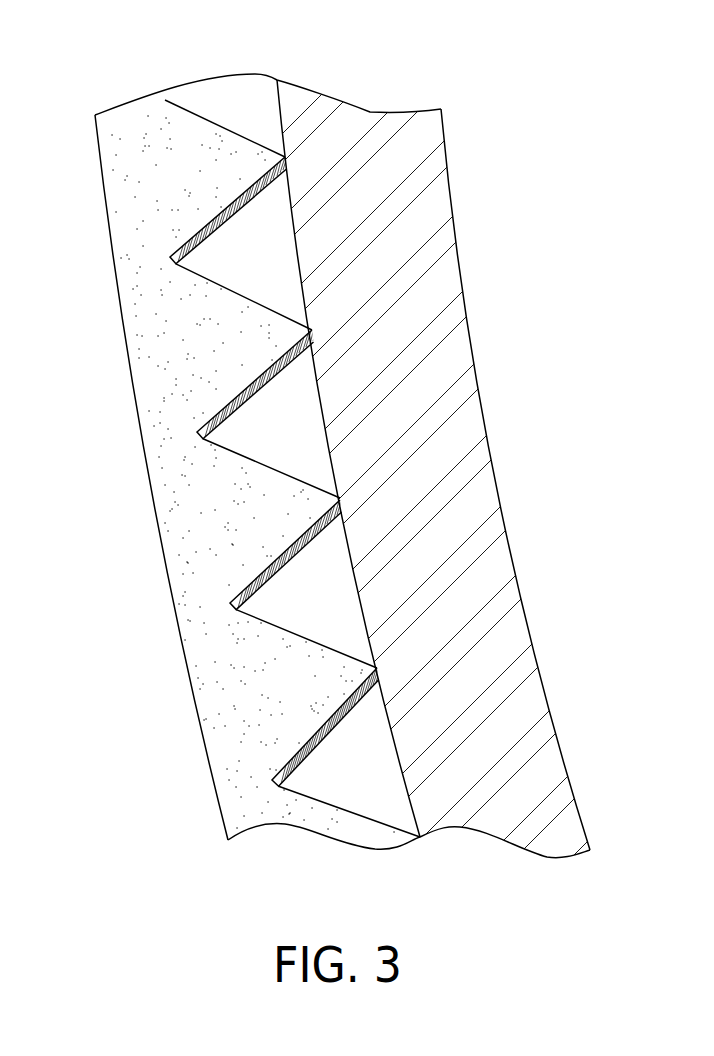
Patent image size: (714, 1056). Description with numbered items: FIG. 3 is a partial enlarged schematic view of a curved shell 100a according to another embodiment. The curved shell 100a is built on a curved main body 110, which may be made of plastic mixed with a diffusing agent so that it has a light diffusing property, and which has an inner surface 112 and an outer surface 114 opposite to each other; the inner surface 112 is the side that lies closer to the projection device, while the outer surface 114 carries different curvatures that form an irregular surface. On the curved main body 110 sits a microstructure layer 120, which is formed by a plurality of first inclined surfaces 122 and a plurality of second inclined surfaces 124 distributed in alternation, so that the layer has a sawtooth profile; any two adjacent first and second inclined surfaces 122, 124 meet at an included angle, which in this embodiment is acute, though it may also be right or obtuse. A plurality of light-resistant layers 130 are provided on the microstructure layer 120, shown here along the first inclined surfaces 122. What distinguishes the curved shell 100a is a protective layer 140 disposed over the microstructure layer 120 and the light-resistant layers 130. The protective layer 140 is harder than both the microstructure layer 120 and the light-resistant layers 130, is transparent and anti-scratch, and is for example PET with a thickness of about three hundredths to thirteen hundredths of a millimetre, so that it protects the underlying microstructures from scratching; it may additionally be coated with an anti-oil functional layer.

The curved shell 100a is at (558, 79).
The curved main body 110 is at (563, 332).
The inner surface 112 is at (481, 347).
The outer surface 114 is at (335, 409).
The microstructure layer 120 is at (224, 494).
The first inclined surfaces 122 is at (214, 468).
The second inclined surfaces 124 is at (218, 452).
The light-resistant layers 130 is at (193, 236).
The protective layer 140 is at (131, 313).